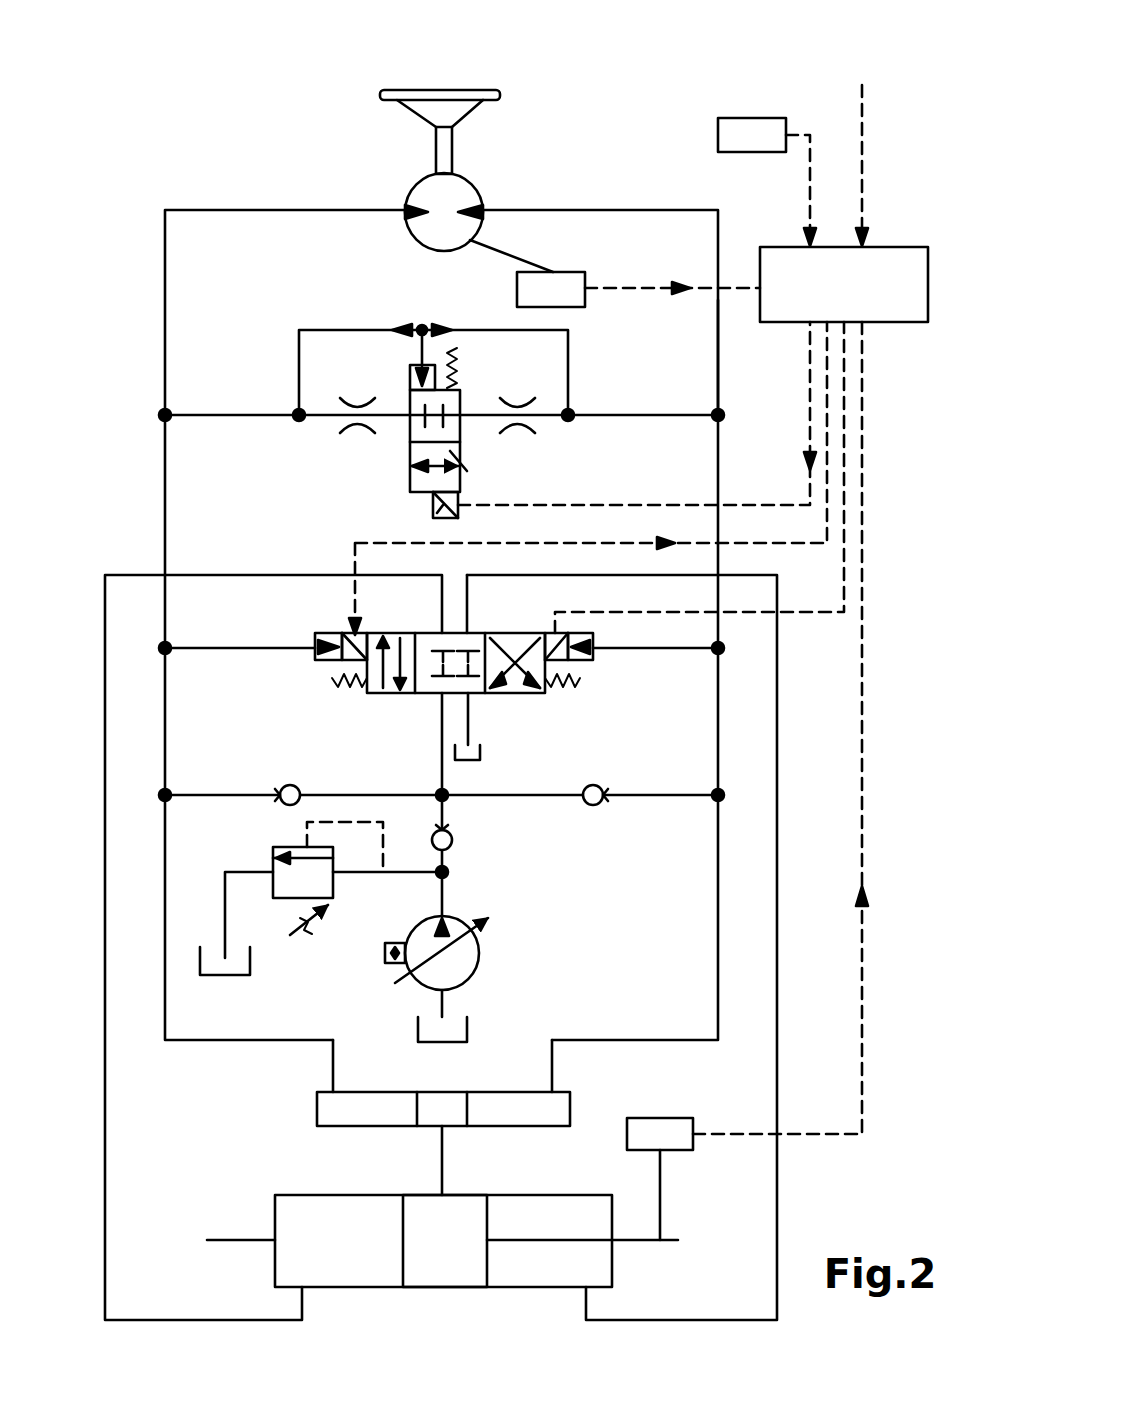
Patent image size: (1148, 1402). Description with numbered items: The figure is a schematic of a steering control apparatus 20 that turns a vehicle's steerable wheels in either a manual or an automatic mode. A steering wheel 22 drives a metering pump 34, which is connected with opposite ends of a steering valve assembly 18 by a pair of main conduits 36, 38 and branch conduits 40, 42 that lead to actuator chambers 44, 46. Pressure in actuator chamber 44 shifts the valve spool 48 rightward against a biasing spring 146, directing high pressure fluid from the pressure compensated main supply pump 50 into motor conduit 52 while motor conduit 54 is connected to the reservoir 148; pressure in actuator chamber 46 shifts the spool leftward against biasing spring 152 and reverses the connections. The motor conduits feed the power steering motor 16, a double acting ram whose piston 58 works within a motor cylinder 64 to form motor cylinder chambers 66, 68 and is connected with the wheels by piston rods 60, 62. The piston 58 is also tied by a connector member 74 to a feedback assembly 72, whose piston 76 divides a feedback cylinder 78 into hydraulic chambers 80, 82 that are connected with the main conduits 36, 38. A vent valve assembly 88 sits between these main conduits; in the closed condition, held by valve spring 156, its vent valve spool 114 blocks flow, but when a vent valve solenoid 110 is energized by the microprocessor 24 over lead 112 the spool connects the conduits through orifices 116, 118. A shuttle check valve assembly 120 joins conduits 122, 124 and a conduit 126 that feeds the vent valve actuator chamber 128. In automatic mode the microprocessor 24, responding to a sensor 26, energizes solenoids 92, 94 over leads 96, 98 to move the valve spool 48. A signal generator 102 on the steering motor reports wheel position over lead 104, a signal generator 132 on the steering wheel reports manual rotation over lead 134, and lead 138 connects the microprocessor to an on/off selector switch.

The power steering motor 16 is at (448, 1308).
The steering valve assembly 18 is at (360, 702).
The steering control apparatus 20 is at (228, 133).
The steering wheel 22 is at (500, 93).
The microprocessor 24 is at (905, 318).
The sensor 26 is at (750, 134).
The metering pump 34 is at (450, 193).
The main conduit 36 is at (165, 342).
The main conduit 38 is at (718, 335).
The branch conduit 40 is at (262, 645).
The branch conduit 42 is at (692, 646).
The actuator chamber 44 is at (340, 632).
The actuator chamber 46 is at (590, 660).
The valve spool 48 is at (398, 680).
The main supply pump 50 is at (486, 920).
The motor conduit 52 is at (107, 1022).
The motor conduit 54 is at (777, 945).
The piston 58 is at (455, 1232).
The piston rod 60 is at (242, 1240).
The piston rod 62 is at (632, 1243).
The motor cylinder 64 is at (300, 1195).
The motor cylinder chamber 66 is at (345, 1216).
The motor cylinder chamber 68 is at (528, 1216).
The feedback assembly 72 is at (312, 1108).
The connector member 74 is at (441, 1166).
The piston 76 is at (442, 1106).
The feedback cylinder 78 is at (570, 1117).
The hydraulic chamber 80 is at (368, 1110).
The hydraulic chamber 82 is at (512, 1106).
The vent valve assembly 88 is at (392, 467).
The solenoid 92 is at (362, 638).
The solenoid 94 is at (548, 637).
The electrical lead 96 is at (672, 543).
The electrical lead 98 is at (812, 625).
The signal generator 102 is at (663, 1136).
The lead 104 is at (862, 1106).
The vent valve solenoid 110 is at (433, 510).
The electrical lead 112 is at (684, 504).
The vent valve spool 114 is at (455, 456).
The orifice 116 is at (355, 428).
The orifice 118 is at (520, 428).
The shuttle check valve assembly 120 is at (422, 324).
The conduit 122 is at (299, 372).
The conduit 124 is at (568, 362).
The conduit 126 is at (430, 346).
The vent valve actuator chamber 128 is at (410, 372).
The signal generator 132 is at (517, 287).
The lead 134 is at (632, 288).
The lead 138 is at (862, 186).
The biasing spring 146 is at (565, 690).
The reservoir 148 is at (485, 752).
The biasing spring 152 is at (340, 689).
The valve spring 156 is at (460, 376).